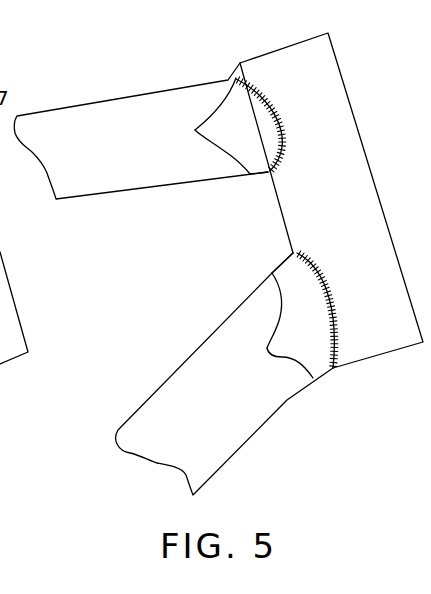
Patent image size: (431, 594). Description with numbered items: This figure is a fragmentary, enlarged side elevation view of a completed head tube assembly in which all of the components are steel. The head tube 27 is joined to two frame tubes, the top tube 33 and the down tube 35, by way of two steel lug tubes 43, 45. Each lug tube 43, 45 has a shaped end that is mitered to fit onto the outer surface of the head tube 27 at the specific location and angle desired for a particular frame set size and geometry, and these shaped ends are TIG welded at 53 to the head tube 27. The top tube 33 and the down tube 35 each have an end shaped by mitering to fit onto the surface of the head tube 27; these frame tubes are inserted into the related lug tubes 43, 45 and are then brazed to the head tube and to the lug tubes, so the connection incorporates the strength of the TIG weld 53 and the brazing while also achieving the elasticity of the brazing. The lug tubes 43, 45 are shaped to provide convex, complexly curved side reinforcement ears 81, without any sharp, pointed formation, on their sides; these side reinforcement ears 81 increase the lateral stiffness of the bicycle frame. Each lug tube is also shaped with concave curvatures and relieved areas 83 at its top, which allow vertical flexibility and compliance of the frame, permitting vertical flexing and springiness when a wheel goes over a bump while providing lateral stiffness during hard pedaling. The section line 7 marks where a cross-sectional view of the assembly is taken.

The section line 7- 7 is at (143, 53).
The head tube 27 is at (354, 104).
The top tube 33 is at (115, 193).
The down tube 35 is at (162, 385).
The lug tube 43 is at (262, 174).
The lug tube 45 is at (282, 262).
The TIG weld 53 is at (266, 98).
The side reinforcement ears 81 is at (197, 128).
The relieved areas 83 is at (218, 101).